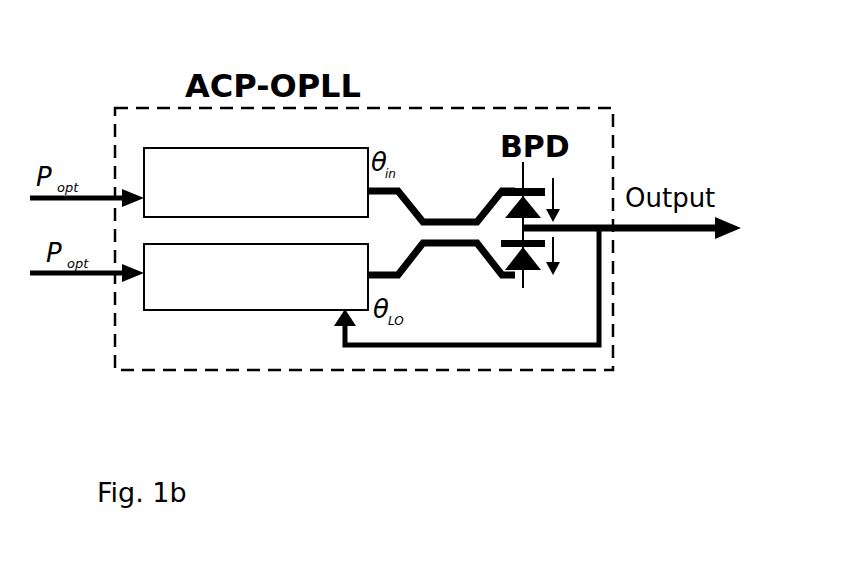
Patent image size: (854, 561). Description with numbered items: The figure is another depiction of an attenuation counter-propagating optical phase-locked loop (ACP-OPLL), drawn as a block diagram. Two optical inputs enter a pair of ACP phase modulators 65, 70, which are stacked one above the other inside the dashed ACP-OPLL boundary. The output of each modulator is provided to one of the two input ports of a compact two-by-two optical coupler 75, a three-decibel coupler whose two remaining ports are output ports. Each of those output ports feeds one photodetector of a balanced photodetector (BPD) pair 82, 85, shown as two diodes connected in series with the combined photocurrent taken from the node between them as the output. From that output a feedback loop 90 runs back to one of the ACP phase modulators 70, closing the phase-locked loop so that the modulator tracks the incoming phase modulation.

The ACP phase modulator 65 is at (238, 326).
The ACP phase modulator 70 is at (153, 138).
The 2×2 optical coupler 75 is at (439, 200).
The balanced photodetector 82 is at (587, 194).
The balanced photodetector 85 is at (546, 281).
The feedback loop 90 is at (499, 363).